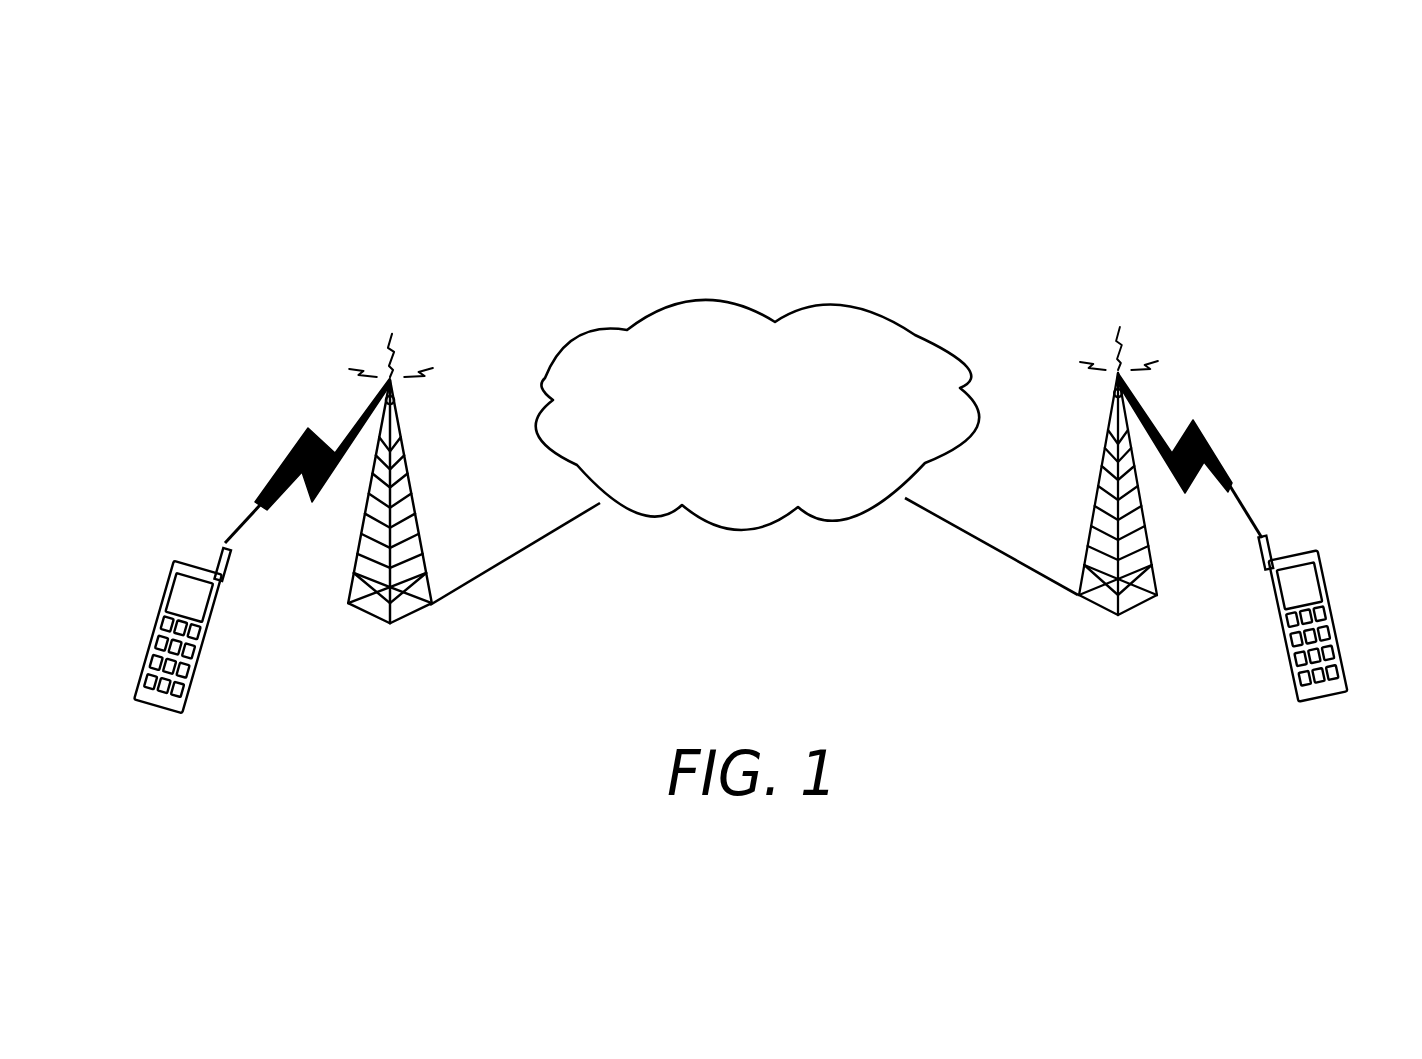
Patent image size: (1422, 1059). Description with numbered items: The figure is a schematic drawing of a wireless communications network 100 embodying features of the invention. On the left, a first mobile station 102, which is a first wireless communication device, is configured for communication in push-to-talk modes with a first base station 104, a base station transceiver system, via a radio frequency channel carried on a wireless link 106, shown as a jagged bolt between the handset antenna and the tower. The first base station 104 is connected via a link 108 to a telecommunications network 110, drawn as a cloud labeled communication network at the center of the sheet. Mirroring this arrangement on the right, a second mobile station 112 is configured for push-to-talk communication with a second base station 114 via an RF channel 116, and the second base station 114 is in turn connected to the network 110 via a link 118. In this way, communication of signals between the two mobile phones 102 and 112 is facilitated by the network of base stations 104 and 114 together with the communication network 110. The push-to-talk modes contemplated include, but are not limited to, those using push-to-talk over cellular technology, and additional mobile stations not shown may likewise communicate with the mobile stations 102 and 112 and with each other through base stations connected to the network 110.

The wireless communications network 100 is at (326, 202).
The first mobile station 102 is at (145, 655).
The first base station 104 is at (423, 537).
The wireless link 106 is at (257, 500).
The link 108 is at (492, 568).
The telecommunications network 110 is at (660, 307).
The second mobile station 112 is at (1338, 628).
The second base station 114 is at (1090, 513).
The RF channel 116 is at (1232, 483).
The link 118 is at (1005, 558).